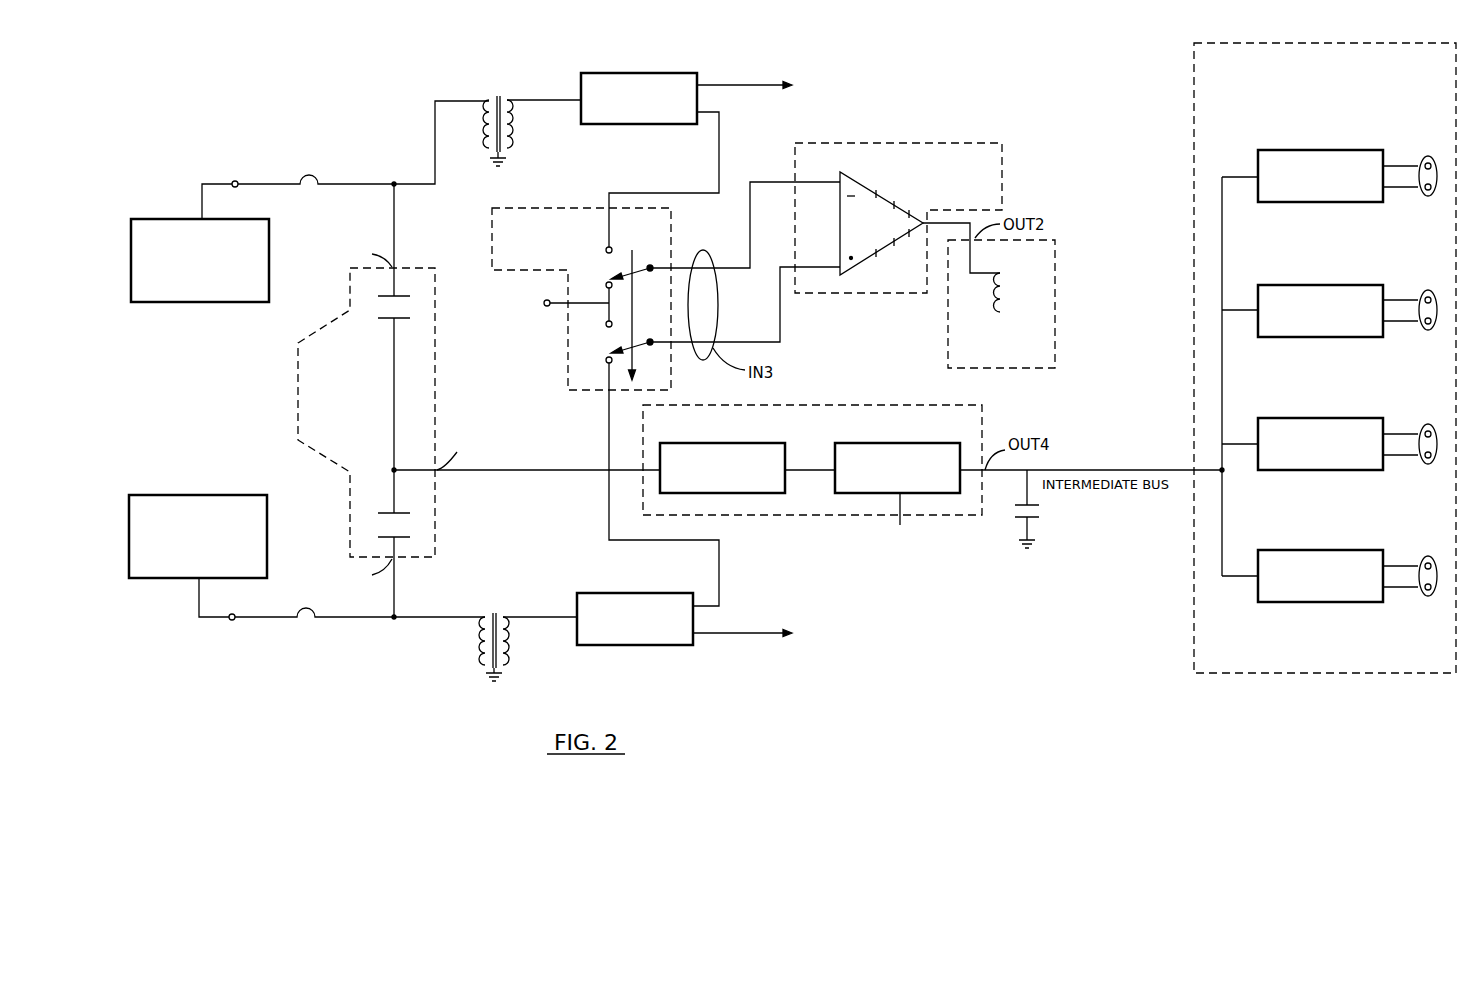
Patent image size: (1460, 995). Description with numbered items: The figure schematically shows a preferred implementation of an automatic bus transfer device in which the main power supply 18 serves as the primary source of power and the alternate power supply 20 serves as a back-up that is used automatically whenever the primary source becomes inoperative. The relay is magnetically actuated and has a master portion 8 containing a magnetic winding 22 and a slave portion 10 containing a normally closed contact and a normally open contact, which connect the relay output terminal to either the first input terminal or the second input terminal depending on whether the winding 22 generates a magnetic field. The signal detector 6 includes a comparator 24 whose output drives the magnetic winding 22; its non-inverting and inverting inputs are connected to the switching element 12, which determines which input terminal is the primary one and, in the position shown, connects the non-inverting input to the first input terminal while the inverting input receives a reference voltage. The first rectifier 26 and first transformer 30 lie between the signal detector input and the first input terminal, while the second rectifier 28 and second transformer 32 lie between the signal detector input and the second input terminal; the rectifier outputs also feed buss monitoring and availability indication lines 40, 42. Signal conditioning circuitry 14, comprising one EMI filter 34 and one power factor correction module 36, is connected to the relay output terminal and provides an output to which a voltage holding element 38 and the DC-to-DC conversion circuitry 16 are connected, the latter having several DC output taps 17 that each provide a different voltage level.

The signal detector 6 is at (920, 218).
The master portion 8 is at (1022, 301).
The slave portion 10 is at (402, 268).
The switching element 12 is at (673, 238).
The signal conditioning circuitry 14 is at (812, 474).
The DC-to-DC conversion circuitry 16 is at (1297, 358).
The DC output taps 17 is at (1428, 157).
The main power supply 18 is at (267, 543).
The alternate power supply 20 is at (216, 302).
The magnetic winding 22 is at (1003, 294).
The comparator 24 is at (847, 178).
The first rectifier 26 is at (636, 593).
The second rectifier 28 is at (640, 73).
The first transformer 30 is at (486, 616).
The second transformer 32 is at (490, 98).
The EMI filter 34 is at (740, 443).
The power factor correction module 36 is at (905, 443).
The voltage holding element 38 is at (1041, 517).
The buss monitoring and availability indication output 40 is at (721, 633).
The buss monitoring and availability indication output 42 is at (727, 85).